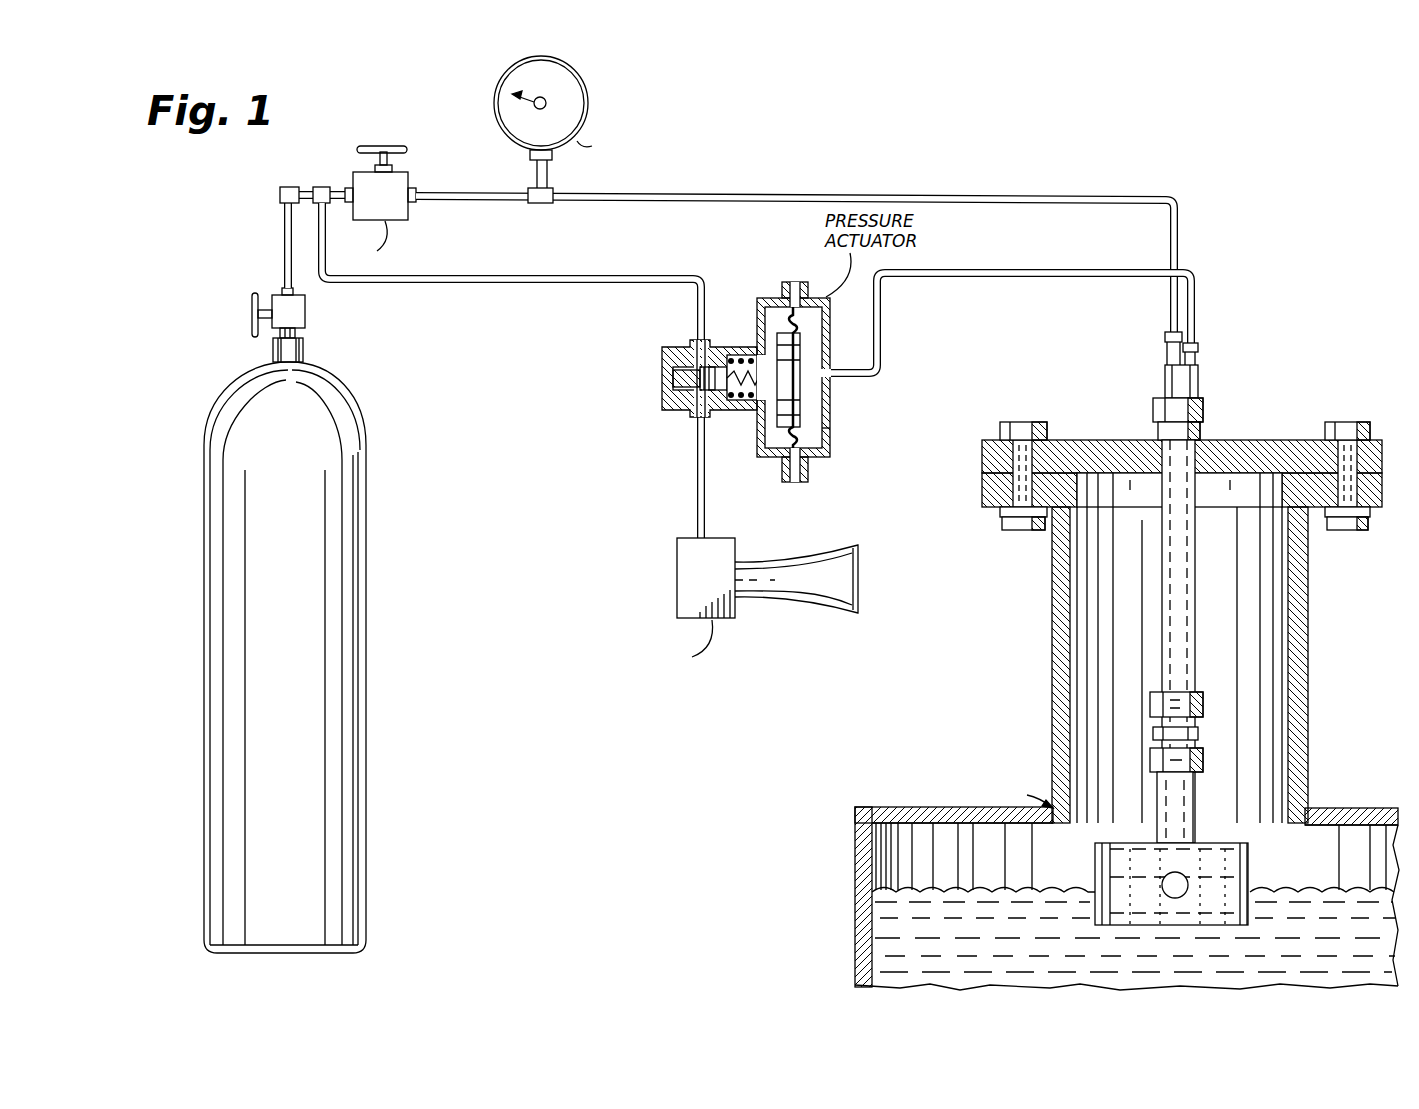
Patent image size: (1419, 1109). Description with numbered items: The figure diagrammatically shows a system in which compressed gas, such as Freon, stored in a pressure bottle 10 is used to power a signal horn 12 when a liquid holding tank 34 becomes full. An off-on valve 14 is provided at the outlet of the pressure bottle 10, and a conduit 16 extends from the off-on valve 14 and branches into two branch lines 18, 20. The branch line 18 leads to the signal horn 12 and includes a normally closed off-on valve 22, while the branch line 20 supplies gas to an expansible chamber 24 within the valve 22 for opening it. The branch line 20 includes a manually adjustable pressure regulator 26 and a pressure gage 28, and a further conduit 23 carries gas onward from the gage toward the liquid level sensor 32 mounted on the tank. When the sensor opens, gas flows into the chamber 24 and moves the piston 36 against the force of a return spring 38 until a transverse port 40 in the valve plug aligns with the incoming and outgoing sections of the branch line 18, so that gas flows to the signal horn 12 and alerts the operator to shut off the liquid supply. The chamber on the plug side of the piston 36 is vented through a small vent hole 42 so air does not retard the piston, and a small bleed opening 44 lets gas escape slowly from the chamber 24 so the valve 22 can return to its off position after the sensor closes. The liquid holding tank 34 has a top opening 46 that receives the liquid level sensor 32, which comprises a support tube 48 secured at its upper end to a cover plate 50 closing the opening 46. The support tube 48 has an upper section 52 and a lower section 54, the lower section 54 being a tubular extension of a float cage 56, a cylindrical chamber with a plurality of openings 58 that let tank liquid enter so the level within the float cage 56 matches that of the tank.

The pressure bottle 10 is at (306, 686).
The signal horn 12 is at (767, 604).
The off-on valve 14 is at (306, 315).
The conduit 16 is at (284, 247).
The branch line 18 is at (551, 284).
The branch line 20 is at (744, 196).
The normally closed off-on valve 22 is at (679, 414).
The conduit to pressure actuator chamber 23 is at (1032, 279).
The expansible chamber 24 is at (812, 397).
The manually adjustable pressure regulator 26 is at (406, 172).
The pressure gage 28 is at (588, 129).
The liquid level sensor 32 is at (1201, 786).
The liquid holding tank 34 is at (1127, 867).
The piston 36 is at (790, 353).
The return spring 38 is at (748, 354).
The transverse port 40 is at (699, 379).
The vent hole 42 is at (760, 432).
The bleed opening 44 is at (830, 430).
The top opening 46 is at (1247, 640).
The support tube 48 is at (1198, 548).
The cover plate 50 is at (1234, 445).
The upper section 52 is at (1220, 582).
The lower section 54 is at (1173, 815).
The float cage 56 is at (1237, 842).
The openings 58 is at (1168, 885).